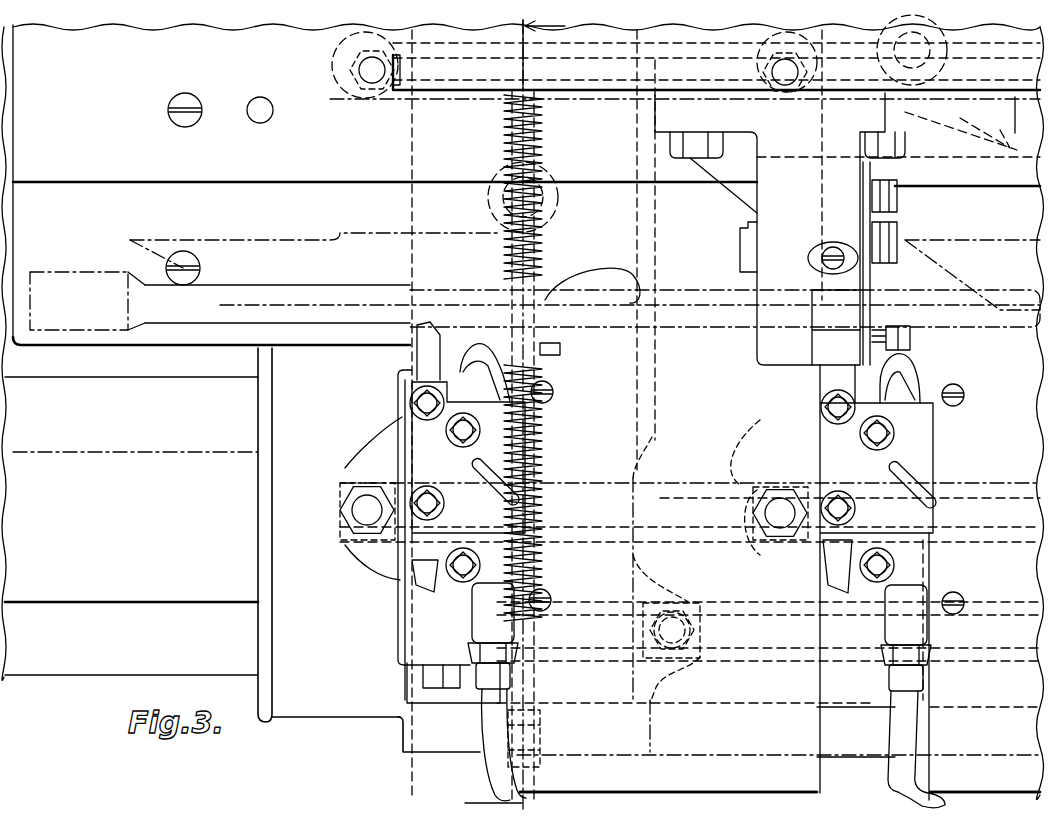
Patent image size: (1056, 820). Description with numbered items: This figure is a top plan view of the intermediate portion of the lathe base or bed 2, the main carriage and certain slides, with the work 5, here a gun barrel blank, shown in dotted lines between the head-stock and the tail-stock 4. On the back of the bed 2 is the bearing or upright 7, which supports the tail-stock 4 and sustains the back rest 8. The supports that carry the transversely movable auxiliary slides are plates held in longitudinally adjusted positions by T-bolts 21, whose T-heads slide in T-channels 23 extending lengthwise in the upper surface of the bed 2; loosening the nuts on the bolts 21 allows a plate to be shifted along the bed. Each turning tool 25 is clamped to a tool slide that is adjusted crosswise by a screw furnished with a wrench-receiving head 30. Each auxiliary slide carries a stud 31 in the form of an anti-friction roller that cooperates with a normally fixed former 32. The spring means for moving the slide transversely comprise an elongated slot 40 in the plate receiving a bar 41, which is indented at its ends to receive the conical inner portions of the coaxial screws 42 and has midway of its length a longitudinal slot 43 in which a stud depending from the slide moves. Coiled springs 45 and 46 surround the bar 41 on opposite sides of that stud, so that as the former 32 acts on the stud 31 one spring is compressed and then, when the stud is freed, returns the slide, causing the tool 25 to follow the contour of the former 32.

The base or bed 2 is at (75, 664).
The tail-stock 4 is at (505, 417).
The work 5 is at (338, 328).
The bearing or upright 7 is at (528, 412).
The back rest 8 is at (768, 202).
The T-bolts 21 is at (348, 100).
The T-channels 23 is at (420, 98).
The turning tool 25 is at (432, 352).
The heads 30 is at (532, 797).
The stud or projection 31 is at (558, 207).
The former 32 is at (330, 212).
The elongated slot 40 is at (545, 348).
The bar 41 is at (548, 298).
The coaxial screws 42 is at (520, 65).
The longitudinal slot 43 is at (550, 360).
The coiled spring 45 is at (547, 150).
The coiled spring 46 is at (540, 472).